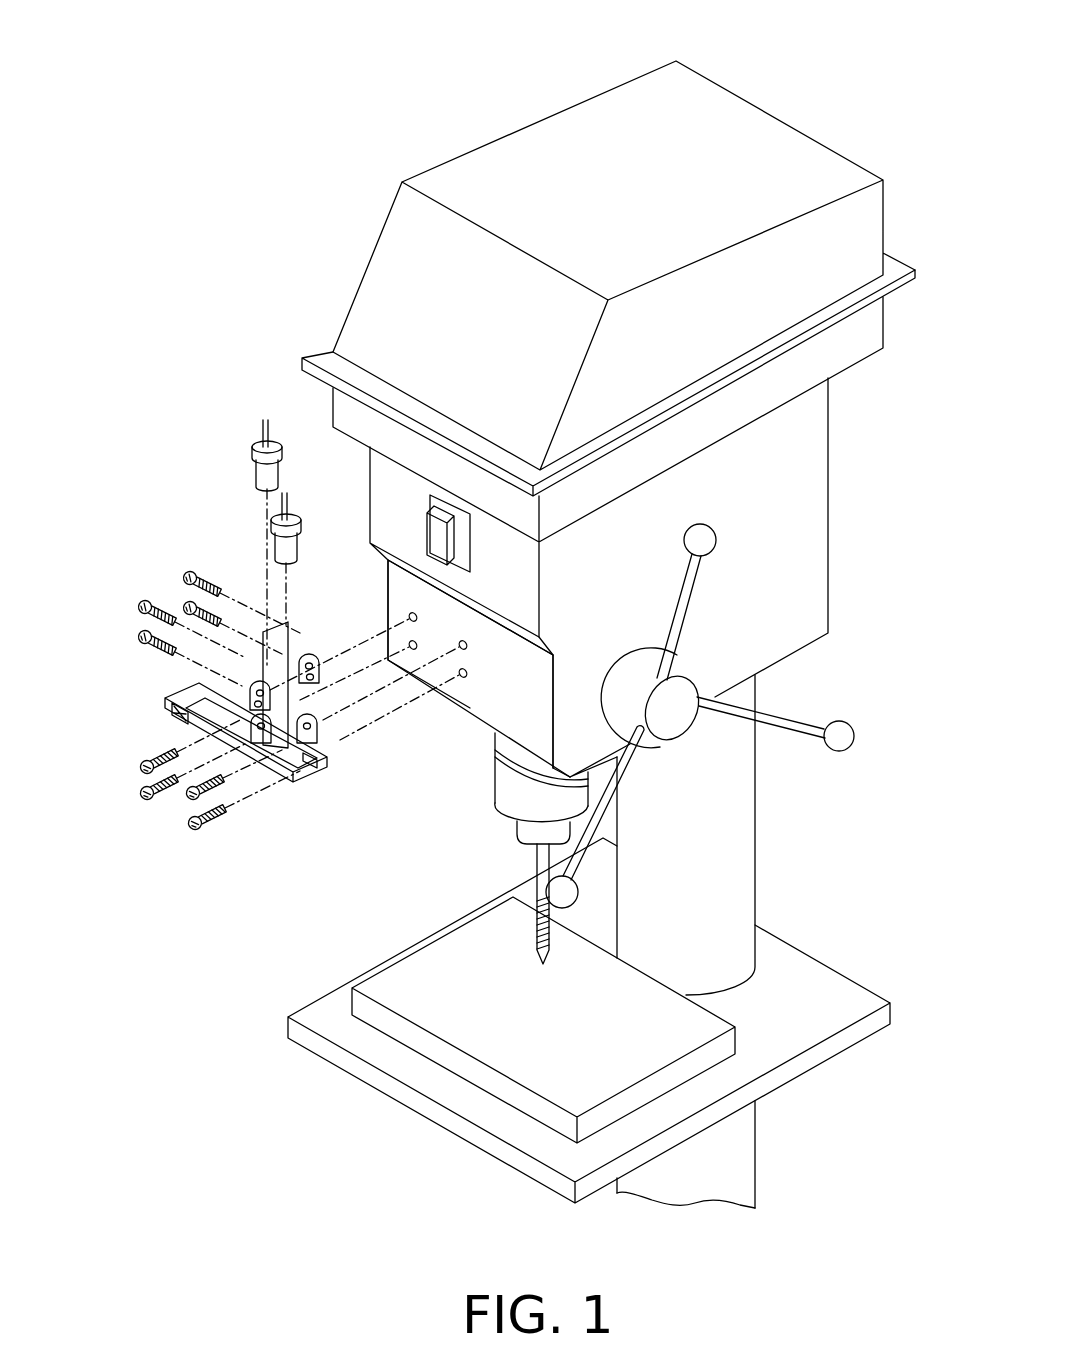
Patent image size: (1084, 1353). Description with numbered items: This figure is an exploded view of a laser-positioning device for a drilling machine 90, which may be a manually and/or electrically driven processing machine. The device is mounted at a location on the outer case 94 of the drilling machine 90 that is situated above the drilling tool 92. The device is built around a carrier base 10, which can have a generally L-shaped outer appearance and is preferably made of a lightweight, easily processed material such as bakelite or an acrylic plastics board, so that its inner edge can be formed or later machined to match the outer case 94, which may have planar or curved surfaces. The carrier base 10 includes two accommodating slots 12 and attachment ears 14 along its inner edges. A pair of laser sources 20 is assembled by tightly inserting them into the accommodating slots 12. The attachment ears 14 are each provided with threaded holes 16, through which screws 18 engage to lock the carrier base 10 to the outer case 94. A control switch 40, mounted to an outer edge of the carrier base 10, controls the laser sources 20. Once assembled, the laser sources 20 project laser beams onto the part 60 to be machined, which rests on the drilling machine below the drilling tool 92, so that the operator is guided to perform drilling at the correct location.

The drilling machine 90 is at (800, 127).
The drilling tool 92 is at (522, 880).
The outer case 94 is at (402, 582).
The part to be machined 60 is at (687, 1072).
The carrier base 10 is at (186, 733).
The accommodating slots 12 is at (296, 652).
The attachment ears 14 is at (272, 706).
The threaded holes 16 is at (302, 638).
The screws 18 is at (196, 822).
The laser sources 20 is at (268, 548).
The control switch 40 is at (171, 710).